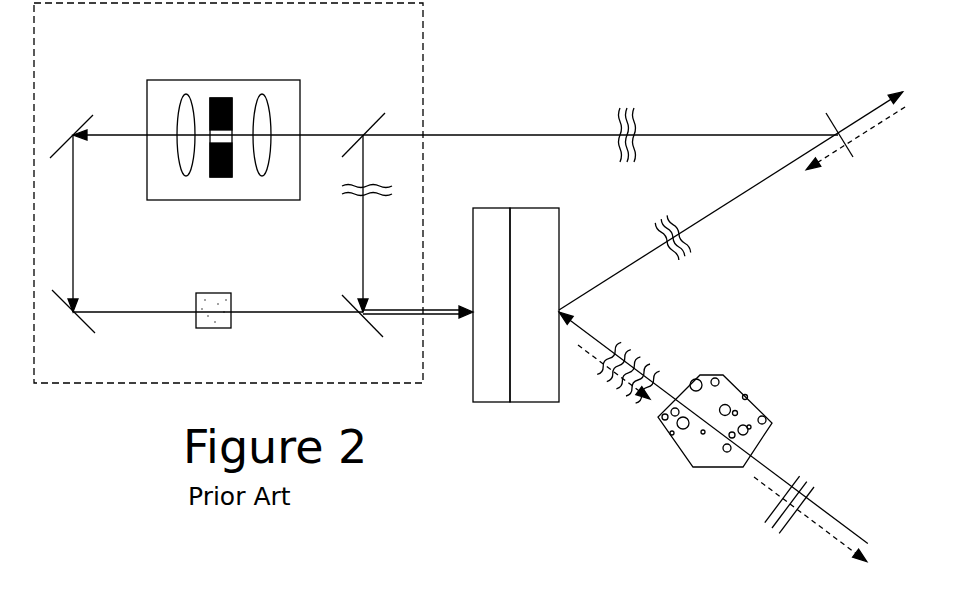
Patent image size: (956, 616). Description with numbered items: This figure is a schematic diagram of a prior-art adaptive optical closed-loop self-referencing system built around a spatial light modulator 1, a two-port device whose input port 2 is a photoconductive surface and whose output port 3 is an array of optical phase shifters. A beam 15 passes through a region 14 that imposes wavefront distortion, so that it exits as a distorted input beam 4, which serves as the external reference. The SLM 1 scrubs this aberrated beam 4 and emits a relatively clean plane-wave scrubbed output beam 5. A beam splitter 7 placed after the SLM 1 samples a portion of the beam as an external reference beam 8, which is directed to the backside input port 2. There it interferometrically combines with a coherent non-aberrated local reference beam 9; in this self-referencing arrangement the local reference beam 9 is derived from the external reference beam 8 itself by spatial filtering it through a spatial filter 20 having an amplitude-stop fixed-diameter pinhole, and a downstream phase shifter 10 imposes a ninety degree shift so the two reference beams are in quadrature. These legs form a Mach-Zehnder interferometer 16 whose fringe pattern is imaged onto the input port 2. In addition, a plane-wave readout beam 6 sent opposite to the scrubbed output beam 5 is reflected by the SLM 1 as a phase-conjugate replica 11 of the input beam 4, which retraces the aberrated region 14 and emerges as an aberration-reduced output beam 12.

The spatial light modulator 1 is at (512, 312).
The input port 2 is at (497, 218).
The output port 3 is at (540, 230).
The distorted input beam 4 is at (597, 337).
The scrubbed output beam 5 is at (681, 230).
The readout beam 6 is at (862, 137).
The beam splitter 7 is at (838, 118).
The external reference beam 8 is at (614, 110).
The local reference beam 9 is at (126, 308).
The phase shifter 10 is at (210, 300).
The phase-conjugate replica 11 is at (592, 344).
The aberration-reduced output beam 12 is at (838, 540).
The aberrating region 14 is at (742, 395).
The beam 15 is at (845, 520).
The Mach-Zehnder interferometer 16 is at (423, 25).
The spatial filter 20 is at (238, 88).